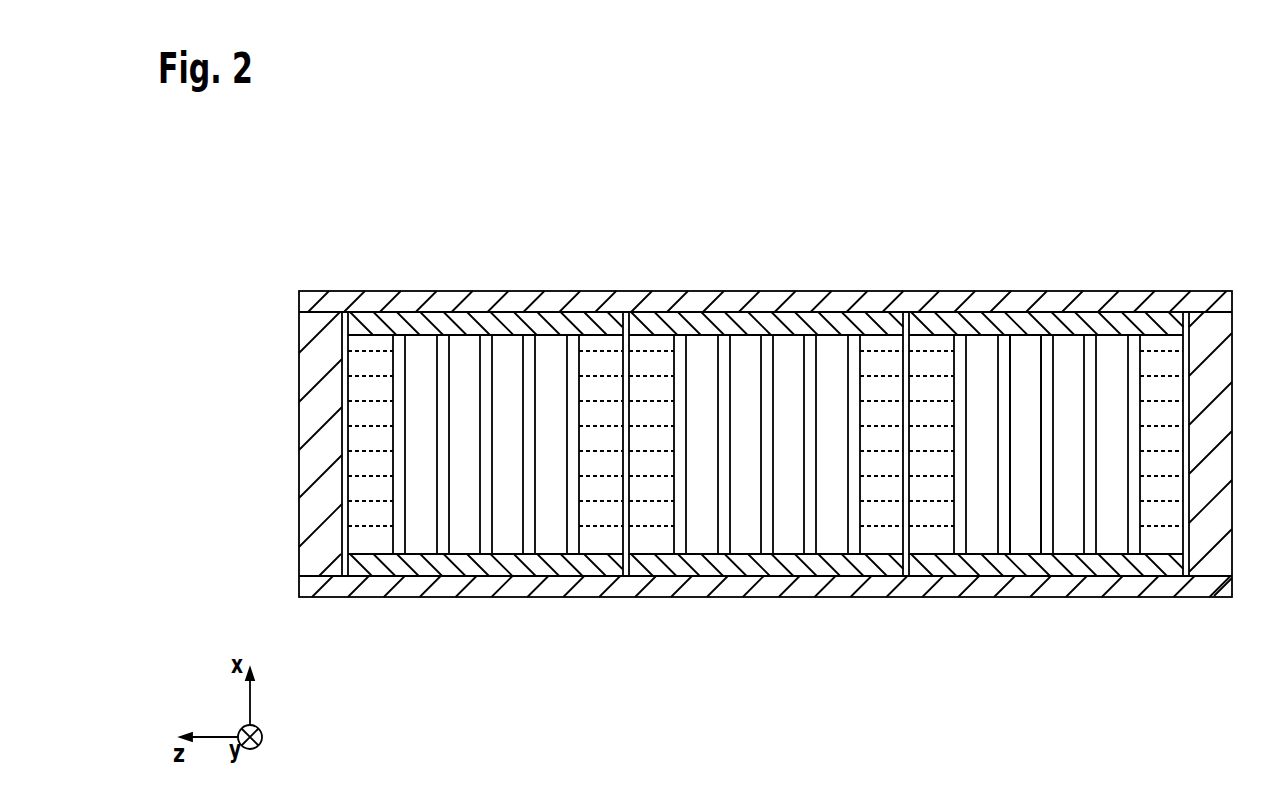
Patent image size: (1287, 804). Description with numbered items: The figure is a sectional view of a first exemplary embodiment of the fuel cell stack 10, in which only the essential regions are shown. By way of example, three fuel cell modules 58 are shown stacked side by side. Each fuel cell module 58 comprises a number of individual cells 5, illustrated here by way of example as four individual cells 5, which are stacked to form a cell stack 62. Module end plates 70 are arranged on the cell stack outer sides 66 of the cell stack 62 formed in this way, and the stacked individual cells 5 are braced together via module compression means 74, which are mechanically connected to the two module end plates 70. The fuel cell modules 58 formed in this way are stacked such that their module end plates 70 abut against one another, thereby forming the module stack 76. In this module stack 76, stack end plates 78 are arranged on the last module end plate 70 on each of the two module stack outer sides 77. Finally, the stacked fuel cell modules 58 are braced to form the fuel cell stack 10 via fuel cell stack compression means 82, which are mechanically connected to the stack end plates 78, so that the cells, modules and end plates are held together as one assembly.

The fuel cell stack 10 is at (1170, 118).
The module stack 76 is at (1191, 203).
The cell stack 62 is at (853, 262).
The cell stack outer side 66 is at (963, 365).
The module stack outer side 77 is at (347, 389).
The stack end plate 78 is at (322, 455).
The fuel cell stack compression means 82 is at (481, 586).
The module end plate 70 is at (930, 517).
The individual cell 5 is at (1025, 517).
The module compression means 74 is at (1097, 565).
The fuel cell module 58 is at (1180, 673).